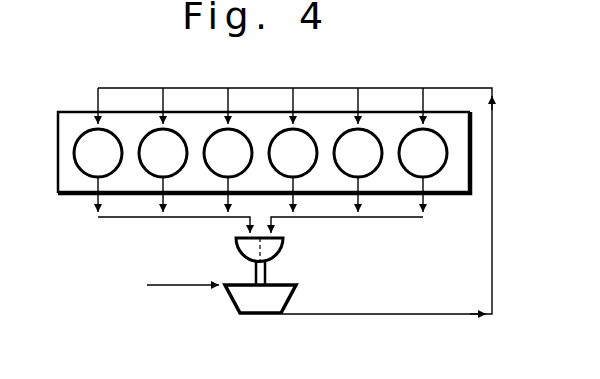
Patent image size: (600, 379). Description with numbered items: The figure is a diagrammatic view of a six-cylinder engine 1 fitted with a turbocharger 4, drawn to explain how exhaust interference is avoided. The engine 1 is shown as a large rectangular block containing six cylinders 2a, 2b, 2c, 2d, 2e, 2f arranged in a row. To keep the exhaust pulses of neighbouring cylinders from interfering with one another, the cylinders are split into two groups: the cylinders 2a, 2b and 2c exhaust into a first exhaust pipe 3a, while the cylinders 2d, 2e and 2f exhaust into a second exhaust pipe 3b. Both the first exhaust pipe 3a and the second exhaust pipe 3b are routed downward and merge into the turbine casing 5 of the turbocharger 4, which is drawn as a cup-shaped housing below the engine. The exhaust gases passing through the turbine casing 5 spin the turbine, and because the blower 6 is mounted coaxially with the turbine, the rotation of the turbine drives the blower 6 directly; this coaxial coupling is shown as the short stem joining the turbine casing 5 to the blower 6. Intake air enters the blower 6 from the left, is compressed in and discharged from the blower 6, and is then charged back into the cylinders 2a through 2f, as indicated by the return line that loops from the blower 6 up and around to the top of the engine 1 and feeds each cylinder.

The engine 1 is at (85, 101).
The cylinder 2a is at (98, 150).
The cylinder 2b is at (163, 150).
The cylinder 2c is at (228, 150).
The cylinder 2d is at (293, 150).
The cylinder 2e is at (358, 150).
The cylinder 2f is at (423, 150).
The first exhaust pipe 3a is at (148, 218).
The second exhaust pipe 3b is at (397, 218).
The turbocharger 4 is at (240, 272).
The turbine casing 5 is at (276, 248).
The blower 6 is at (246, 301).